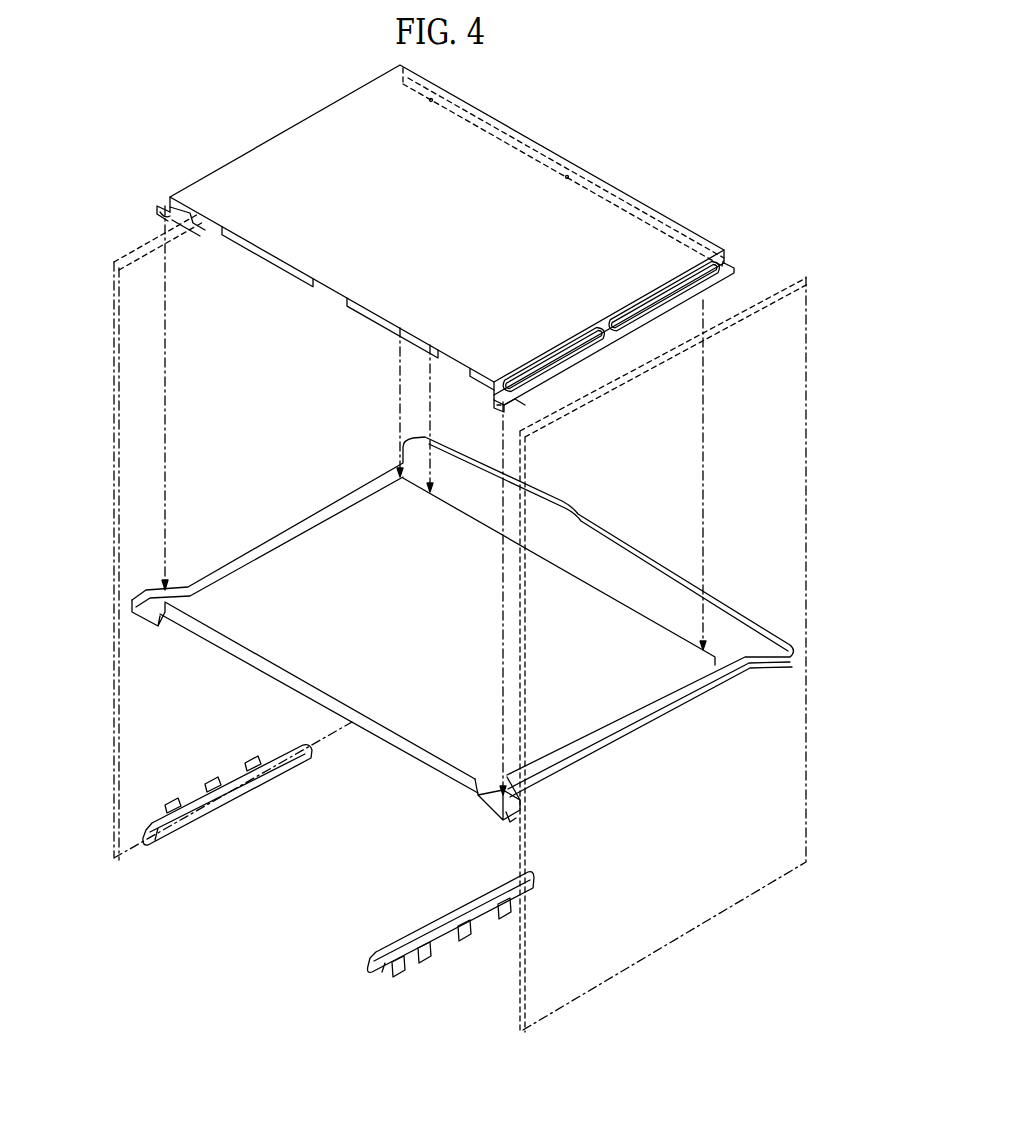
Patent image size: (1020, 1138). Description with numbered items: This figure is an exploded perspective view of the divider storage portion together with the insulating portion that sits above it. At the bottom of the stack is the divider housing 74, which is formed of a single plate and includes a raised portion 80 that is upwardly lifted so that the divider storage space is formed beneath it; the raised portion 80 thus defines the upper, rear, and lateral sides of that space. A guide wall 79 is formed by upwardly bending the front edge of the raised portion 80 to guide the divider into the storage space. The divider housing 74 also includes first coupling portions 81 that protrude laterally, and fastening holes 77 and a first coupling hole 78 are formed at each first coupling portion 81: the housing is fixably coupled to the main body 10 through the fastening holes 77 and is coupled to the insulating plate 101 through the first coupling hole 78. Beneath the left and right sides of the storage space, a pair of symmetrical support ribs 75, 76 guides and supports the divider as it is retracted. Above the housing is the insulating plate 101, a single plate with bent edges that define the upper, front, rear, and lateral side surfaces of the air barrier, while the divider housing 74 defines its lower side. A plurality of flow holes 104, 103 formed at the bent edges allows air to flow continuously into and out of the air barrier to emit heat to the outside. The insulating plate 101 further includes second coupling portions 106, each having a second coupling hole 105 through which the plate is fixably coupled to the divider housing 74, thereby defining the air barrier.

The main body 10 is at (112, 422).
The divider housing 74 is at (463, 657).
The support rib 75 is at (160, 820).
The support rib 76 is at (440, 938).
The fastening hole 77 is at (522, 813).
The first coupling hole 78 is at (476, 800).
The guide wall 79 is at (389, 741).
The raised portion 80 is at (657, 635).
The first coupling portion 81 is at (511, 793).
The insulating plate 101 is at (590, 143).
The flow hole 103 is at (647, 308).
The flow hole 104 is at (208, 227).
The second coupling hole 105 is at (493, 403).
The second coupling portion 106 is at (515, 405).